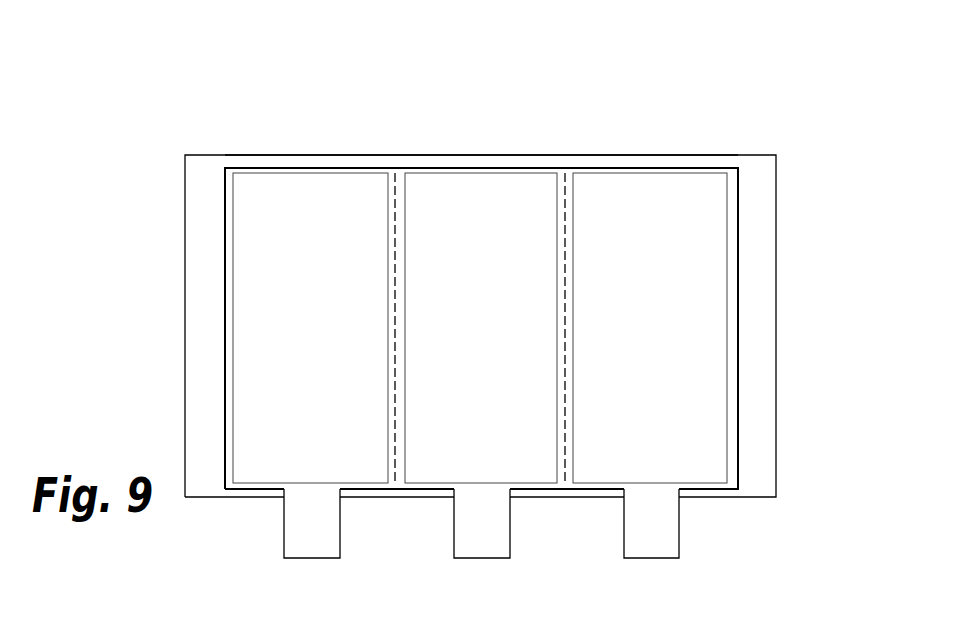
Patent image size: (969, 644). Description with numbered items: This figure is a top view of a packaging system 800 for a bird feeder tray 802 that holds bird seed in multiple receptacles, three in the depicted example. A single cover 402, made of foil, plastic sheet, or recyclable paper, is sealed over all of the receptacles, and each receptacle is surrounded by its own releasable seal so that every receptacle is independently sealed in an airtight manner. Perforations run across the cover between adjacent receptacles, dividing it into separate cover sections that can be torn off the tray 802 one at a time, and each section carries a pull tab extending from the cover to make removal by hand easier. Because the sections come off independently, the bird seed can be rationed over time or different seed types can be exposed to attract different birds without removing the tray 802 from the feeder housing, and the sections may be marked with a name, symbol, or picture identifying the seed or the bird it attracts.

The packaging system 800 is at (181, 83).
The tray 802 is at (755, 280).
The cover 402 is at (690, 246).